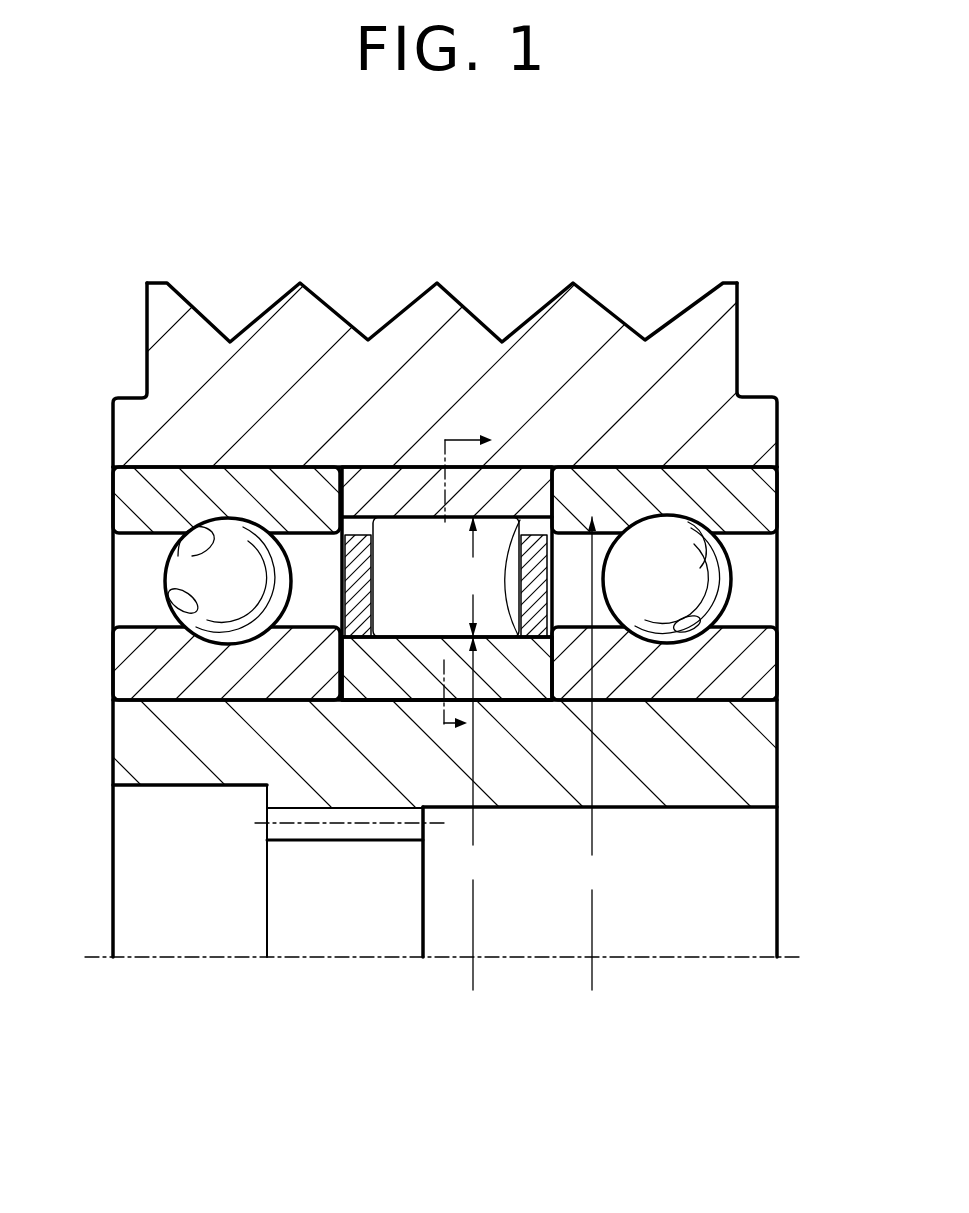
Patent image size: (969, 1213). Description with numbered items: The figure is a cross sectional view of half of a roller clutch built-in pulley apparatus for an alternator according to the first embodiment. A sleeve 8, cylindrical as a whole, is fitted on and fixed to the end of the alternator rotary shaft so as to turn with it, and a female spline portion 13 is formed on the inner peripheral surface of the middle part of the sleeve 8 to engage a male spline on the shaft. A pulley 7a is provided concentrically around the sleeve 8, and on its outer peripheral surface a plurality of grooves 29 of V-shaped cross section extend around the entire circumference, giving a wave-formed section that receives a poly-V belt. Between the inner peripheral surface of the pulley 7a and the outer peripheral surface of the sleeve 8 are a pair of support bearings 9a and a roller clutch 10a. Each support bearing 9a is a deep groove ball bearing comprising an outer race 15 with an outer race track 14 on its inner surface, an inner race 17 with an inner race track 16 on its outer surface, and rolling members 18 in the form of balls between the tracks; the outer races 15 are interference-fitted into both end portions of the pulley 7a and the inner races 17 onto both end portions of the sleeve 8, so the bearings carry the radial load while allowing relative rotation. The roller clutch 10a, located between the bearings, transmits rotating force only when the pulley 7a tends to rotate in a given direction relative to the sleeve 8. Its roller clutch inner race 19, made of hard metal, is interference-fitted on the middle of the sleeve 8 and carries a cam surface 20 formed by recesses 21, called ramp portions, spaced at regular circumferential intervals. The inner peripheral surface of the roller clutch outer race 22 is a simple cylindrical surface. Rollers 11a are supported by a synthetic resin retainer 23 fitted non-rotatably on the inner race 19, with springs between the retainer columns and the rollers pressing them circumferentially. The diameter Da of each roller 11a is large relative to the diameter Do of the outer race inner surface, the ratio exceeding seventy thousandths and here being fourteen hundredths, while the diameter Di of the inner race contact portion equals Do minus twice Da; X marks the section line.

The pulley 7a is at (262, 365).
The sleeve 8 is at (667, 770).
The support bearing 9a is at (461, 522).
The roller clutch 10a is at (400, 650).
The roller 11a is at (497, 535).
The female spline portion 13 is at (297, 808).
The outer race track 14 is at (192, 553).
The outer race 15 is at (147, 498).
The inner race track 16 is at (168, 596).
The inner race 17 is at (160, 665).
The rolling member 18 is at (243, 557).
The roller clutch inner race 19 is at (523, 697).
The cam surface 20 is at (420, 685).
The recess 21 is at (548, 530).
The roller clutch outer race 22 is at (410, 490).
The retainer 23 is at (363, 582).
The groove 29 is at (192, 300).
The section line X is at (468, 582).
The diameter of the roller Da is at (477, 577).
The diameter of the inner race contact portion Di is at (470, 813).
The diameter of the inner peripheral surface of the outer race Do is at (595, 753).